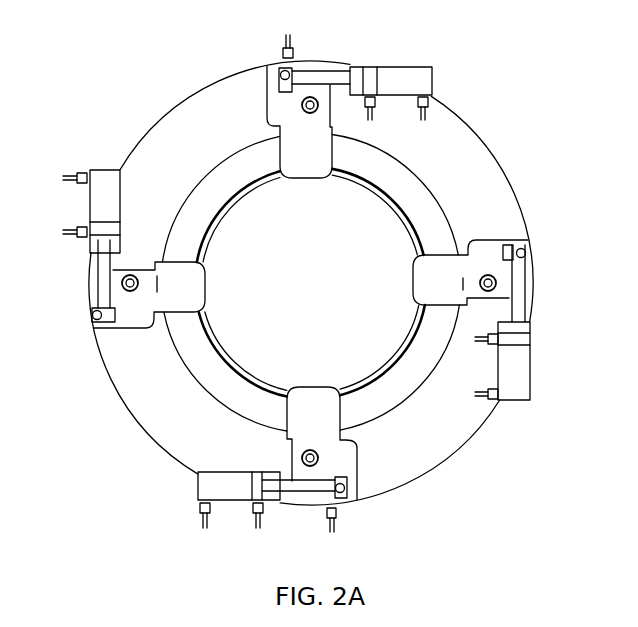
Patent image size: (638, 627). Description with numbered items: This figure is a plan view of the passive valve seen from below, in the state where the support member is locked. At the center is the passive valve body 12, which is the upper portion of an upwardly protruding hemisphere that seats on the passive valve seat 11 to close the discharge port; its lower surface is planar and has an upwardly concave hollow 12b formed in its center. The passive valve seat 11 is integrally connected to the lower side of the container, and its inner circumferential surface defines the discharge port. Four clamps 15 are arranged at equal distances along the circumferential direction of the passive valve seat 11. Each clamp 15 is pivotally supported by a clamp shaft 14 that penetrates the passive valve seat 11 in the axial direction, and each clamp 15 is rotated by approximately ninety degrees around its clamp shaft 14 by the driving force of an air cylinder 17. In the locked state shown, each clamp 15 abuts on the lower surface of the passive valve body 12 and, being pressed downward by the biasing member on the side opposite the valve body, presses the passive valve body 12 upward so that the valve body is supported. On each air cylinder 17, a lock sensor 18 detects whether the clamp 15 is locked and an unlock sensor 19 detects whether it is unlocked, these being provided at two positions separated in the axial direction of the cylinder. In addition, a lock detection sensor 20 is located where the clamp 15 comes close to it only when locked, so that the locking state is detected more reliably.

The passive valve seat 11 is at (497, 182).
The passive valve body 12 is at (433, 230).
The hollow 12b is at (372, 342).
The clamp shaft 14 is at (311, 97).
The clamp 15 is at (272, 102).
The air cylinder 17 is at (413, 66).
The lock sensor 18 is at (375, 107).
The unlock sensor 19 is at (430, 103).
The lock detection sensor 20 is at (283, 52).